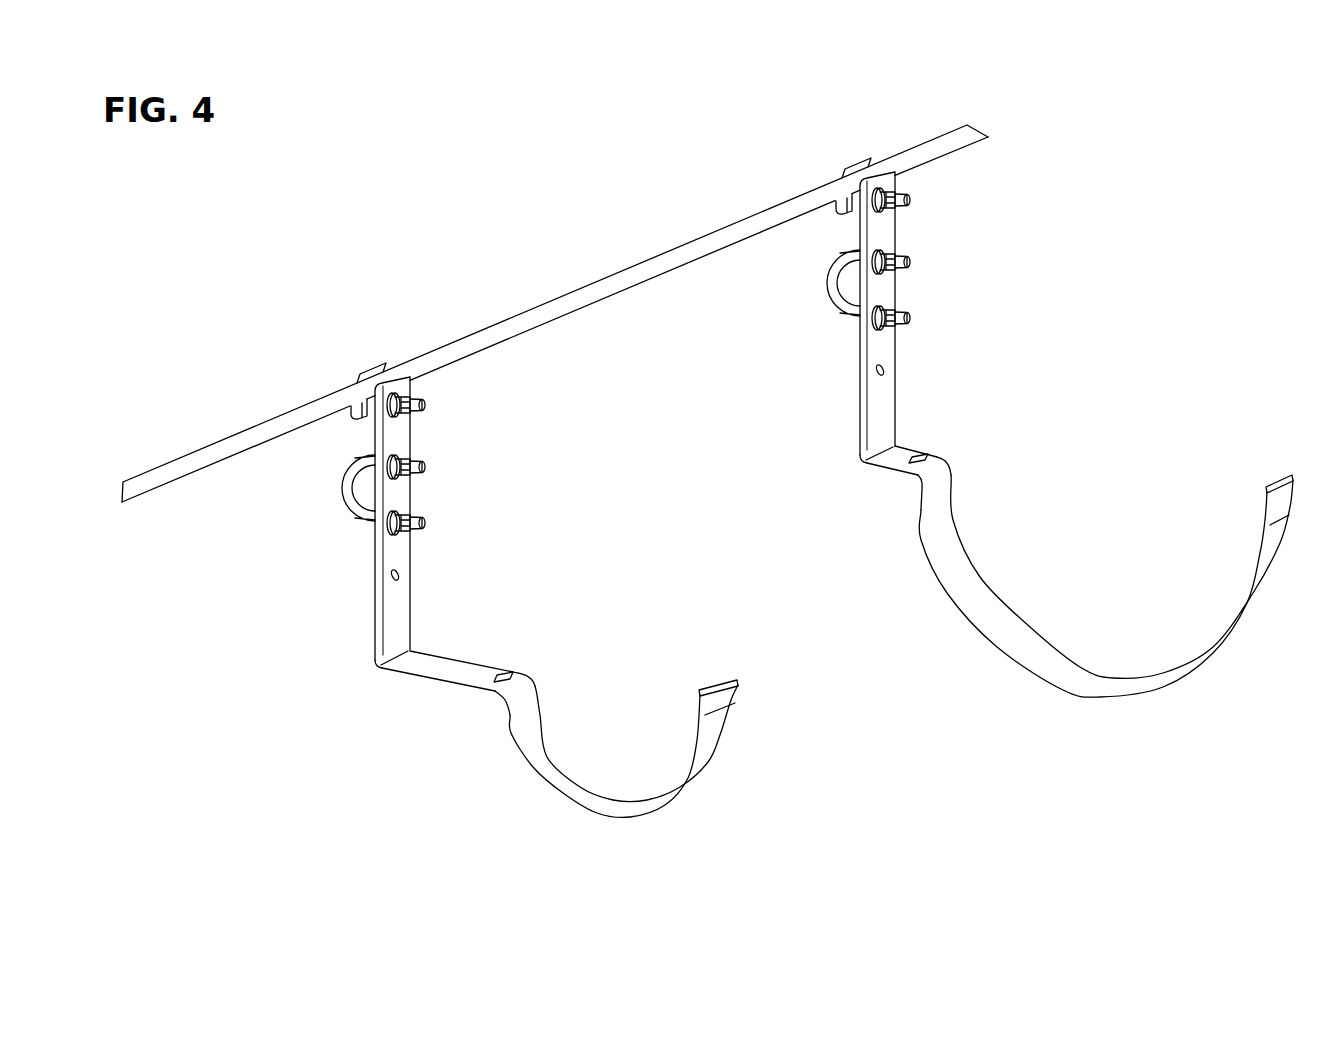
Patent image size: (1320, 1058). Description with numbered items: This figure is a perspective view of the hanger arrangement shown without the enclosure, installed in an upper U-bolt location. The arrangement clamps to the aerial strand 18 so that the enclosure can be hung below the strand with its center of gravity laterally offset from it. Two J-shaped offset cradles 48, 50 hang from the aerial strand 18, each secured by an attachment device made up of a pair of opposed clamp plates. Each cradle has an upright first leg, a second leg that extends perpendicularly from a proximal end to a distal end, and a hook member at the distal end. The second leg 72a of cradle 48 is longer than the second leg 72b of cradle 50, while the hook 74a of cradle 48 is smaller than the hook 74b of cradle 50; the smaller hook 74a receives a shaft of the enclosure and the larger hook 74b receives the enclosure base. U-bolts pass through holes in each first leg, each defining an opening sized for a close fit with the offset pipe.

The aerial strand 18 is at (585, 287).
The J-shaped cradle 48 is at (413, 695).
The J-shaped cradle 50 is at (988, 440).
The second leg 72a is at (467, 672).
The second leg 72b is at (895, 462).
The hook 74a is at (607, 820).
The hook 74b is at (1105, 697).